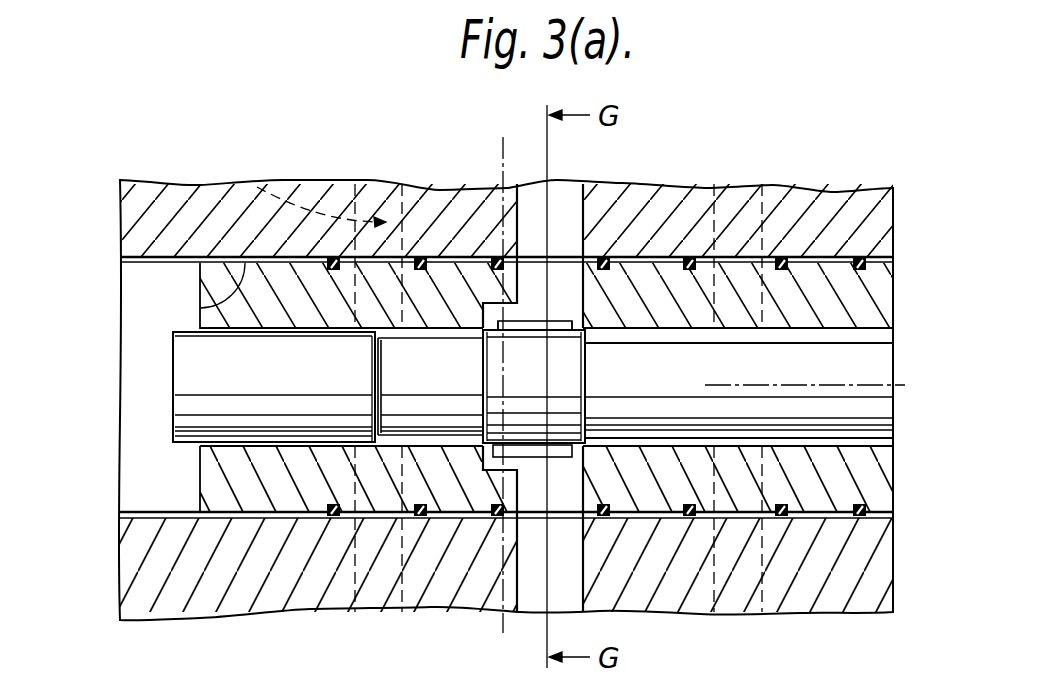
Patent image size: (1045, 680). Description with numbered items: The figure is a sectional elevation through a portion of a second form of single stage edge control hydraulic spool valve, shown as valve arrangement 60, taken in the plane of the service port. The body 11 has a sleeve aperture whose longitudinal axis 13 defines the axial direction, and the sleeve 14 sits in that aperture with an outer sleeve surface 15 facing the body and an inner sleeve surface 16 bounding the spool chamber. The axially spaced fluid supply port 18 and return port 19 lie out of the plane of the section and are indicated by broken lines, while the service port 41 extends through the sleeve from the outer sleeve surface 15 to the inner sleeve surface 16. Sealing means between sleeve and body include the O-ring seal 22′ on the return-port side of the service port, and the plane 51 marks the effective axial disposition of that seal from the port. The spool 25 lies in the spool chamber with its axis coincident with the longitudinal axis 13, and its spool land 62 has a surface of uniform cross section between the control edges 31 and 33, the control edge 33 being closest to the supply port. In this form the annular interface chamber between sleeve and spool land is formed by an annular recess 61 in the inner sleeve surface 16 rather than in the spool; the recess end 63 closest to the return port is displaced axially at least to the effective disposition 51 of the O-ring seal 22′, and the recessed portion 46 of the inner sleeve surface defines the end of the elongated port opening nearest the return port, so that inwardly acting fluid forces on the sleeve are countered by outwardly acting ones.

The body 11 is at (130, 217).
The longitudinal axis 13 is at (880, 385).
The sleeve 14 is at (212, 289).
The outer sleeve surface 15 is at (200, 308).
The inner sleeve surface 16 is at (668, 330).
The fluid supply port 18 is at (737, 216).
The return port 19 is at (257, 187).
The O-ring seal 22′ is at (495, 257).
The spool 25 is at (173, 443).
The control edge 31 is at (480, 338).
The control edge 33 is at (583, 335).
The service port 41 is at (567, 197).
The recessed portion 46 is at (492, 308).
The effective axial disposition of the seal 51 is at (502, 160).
The valve arrangement 60 is at (362, 152).
The annular recess 61 is at (532, 322).
The spool land 62 is at (560, 375).
The end of sleeve recess 63 is at (510, 330).